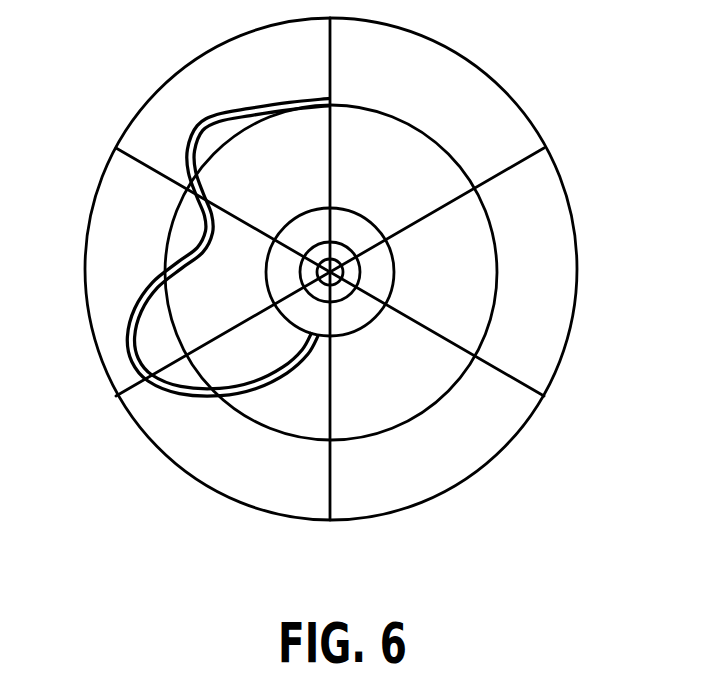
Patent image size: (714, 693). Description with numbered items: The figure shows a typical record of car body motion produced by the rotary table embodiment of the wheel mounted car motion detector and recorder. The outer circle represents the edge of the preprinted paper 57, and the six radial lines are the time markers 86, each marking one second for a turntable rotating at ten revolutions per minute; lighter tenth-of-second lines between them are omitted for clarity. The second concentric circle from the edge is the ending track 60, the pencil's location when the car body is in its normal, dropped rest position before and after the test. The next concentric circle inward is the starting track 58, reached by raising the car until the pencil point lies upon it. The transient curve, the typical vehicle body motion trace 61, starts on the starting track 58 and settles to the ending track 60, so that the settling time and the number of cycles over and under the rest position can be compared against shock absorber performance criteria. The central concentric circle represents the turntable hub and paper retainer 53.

The turntable hub and paper retainer 53 is at (360, 262).
The preprinted paper 57 is at (147, 192).
The starting track 58 is at (357, 209).
The ending track 60 is at (530, 313).
The typical vehicle body motion trace 61 is at (127, 322).
The time markers 86 is at (332, 477).